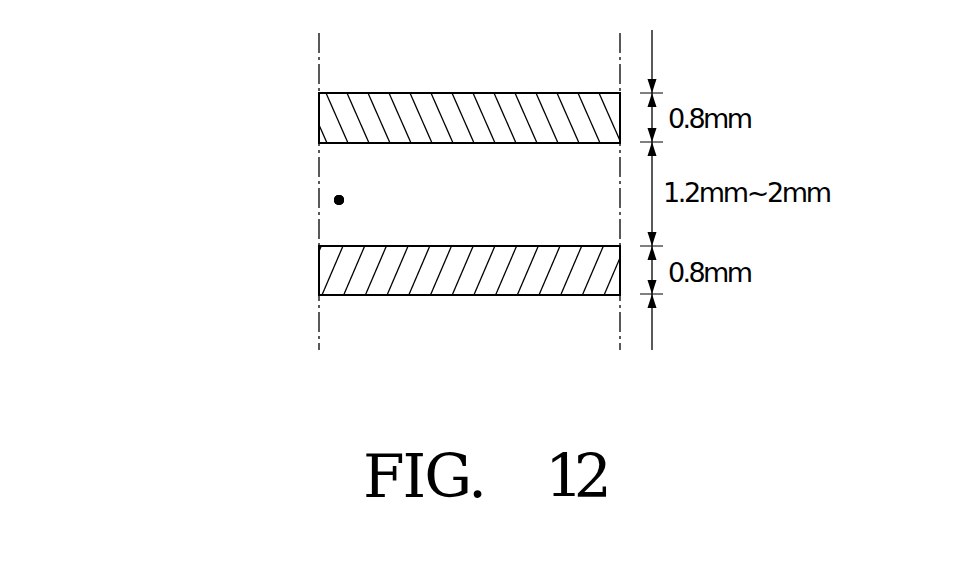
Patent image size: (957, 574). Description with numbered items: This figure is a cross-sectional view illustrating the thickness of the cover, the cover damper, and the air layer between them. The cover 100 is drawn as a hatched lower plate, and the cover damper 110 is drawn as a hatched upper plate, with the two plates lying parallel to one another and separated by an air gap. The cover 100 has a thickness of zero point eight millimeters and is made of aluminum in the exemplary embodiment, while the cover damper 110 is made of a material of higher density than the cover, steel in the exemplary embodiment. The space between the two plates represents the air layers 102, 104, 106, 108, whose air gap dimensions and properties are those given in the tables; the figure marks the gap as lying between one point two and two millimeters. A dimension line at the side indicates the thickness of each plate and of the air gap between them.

The cover damper 110 is at (488, 108).
The cover 100 is at (480, 277).
The air layer 102 is at (336, 200).
The air layer 104 is at (339, 200).
The air layer 106 is at (339, 200).
The air layer 108 is at (339, 200).